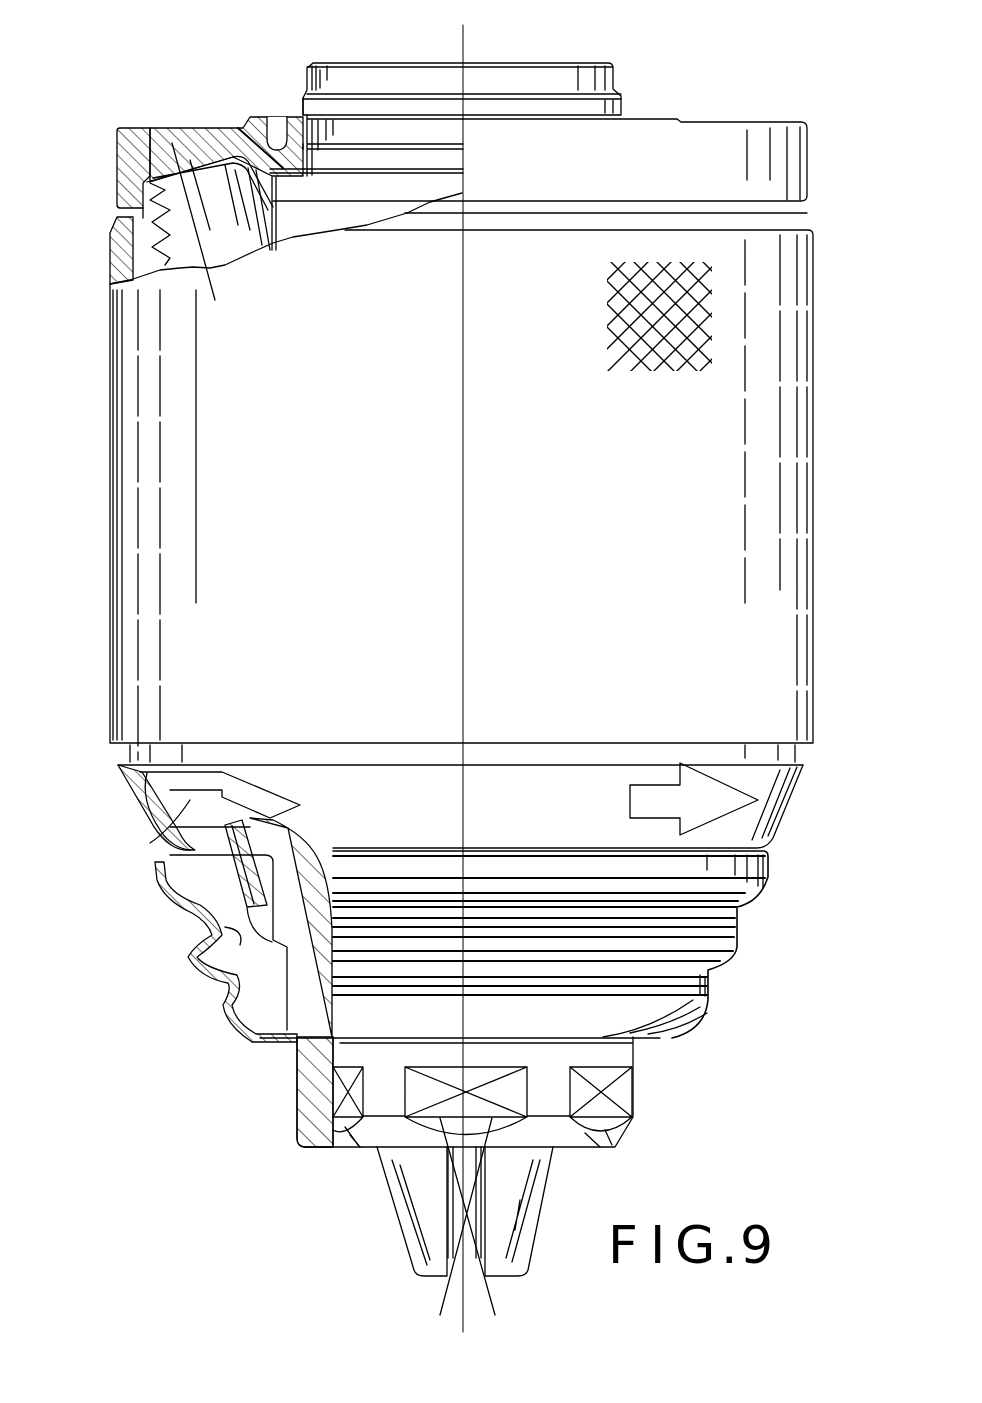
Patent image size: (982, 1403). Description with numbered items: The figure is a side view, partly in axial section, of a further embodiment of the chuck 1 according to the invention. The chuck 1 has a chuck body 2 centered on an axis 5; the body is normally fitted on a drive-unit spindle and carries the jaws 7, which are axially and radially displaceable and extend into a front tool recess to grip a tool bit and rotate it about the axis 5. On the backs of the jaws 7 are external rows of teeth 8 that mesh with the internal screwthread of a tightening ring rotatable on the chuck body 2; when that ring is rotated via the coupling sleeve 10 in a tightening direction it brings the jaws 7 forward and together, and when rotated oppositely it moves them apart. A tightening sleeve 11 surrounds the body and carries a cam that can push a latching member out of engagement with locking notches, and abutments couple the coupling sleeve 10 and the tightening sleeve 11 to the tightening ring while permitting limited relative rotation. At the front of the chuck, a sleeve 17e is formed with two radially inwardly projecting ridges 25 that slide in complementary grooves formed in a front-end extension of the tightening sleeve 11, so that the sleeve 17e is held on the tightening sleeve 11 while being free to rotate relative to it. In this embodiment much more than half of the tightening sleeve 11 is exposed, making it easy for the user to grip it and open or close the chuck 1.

The chuck 1 is at (792, 843).
The chuck body 2 is at (303, 100).
The axis 5 is at (466, 46).
The jaws 7 is at (420, 1203).
The rows of teeth 8 is at (115, 163).
The coupling sleeve 10 is at (172, 890).
The tightening sleeve 11 is at (130, 435).
The sleeve 17e is at (248, 1040).
The radially inwardly projecting ridge 25 is at (190, 965).